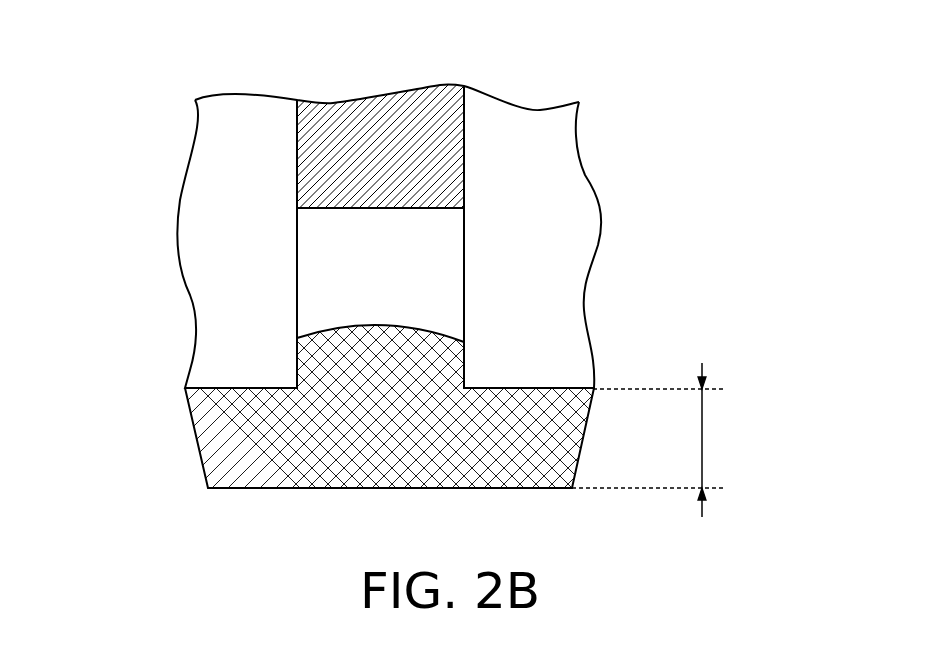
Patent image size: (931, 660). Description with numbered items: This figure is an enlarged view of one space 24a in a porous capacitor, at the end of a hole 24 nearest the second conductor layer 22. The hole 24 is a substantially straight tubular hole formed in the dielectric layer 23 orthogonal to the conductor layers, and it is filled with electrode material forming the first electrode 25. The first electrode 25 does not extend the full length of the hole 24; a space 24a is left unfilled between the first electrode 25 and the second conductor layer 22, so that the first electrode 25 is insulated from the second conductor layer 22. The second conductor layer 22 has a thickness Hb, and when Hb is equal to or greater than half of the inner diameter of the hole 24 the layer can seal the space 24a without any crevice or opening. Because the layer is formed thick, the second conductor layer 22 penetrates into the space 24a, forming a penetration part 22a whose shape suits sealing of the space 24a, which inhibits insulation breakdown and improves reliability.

The second conductor layer 22 is at (193, 430).
The penetration part 22a is at (373, 353).
The dielectric layer 23 is at (203, 253).
The hole 24 is at (468, 288).
The space 24a is at (402, 283).
The first electrode 25 is at (375, 113).
The thickness of the second conductor layer Hb is at (703, 440).